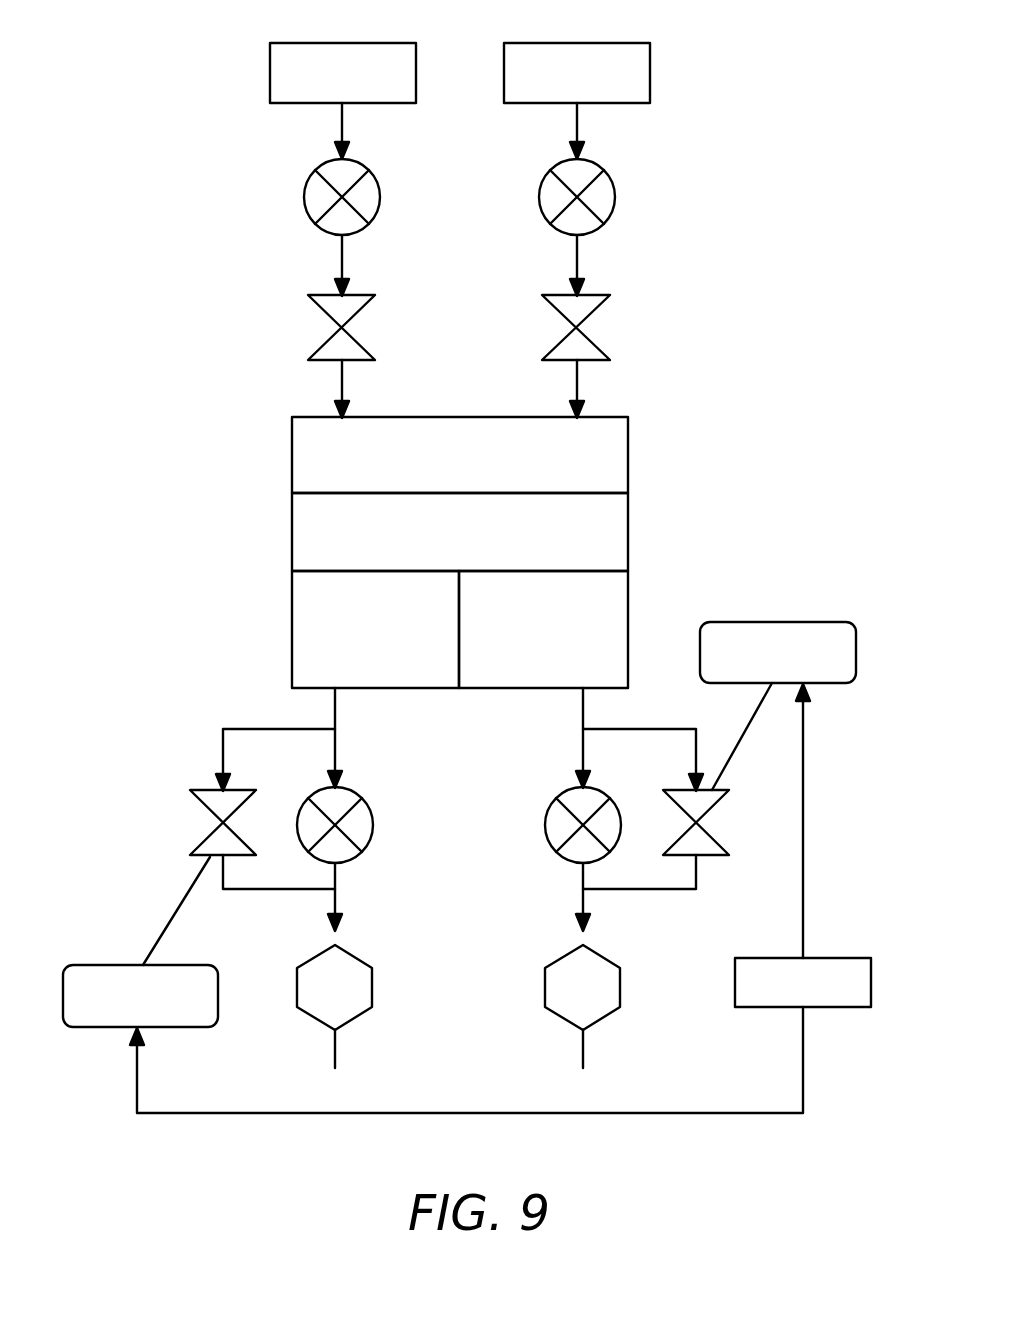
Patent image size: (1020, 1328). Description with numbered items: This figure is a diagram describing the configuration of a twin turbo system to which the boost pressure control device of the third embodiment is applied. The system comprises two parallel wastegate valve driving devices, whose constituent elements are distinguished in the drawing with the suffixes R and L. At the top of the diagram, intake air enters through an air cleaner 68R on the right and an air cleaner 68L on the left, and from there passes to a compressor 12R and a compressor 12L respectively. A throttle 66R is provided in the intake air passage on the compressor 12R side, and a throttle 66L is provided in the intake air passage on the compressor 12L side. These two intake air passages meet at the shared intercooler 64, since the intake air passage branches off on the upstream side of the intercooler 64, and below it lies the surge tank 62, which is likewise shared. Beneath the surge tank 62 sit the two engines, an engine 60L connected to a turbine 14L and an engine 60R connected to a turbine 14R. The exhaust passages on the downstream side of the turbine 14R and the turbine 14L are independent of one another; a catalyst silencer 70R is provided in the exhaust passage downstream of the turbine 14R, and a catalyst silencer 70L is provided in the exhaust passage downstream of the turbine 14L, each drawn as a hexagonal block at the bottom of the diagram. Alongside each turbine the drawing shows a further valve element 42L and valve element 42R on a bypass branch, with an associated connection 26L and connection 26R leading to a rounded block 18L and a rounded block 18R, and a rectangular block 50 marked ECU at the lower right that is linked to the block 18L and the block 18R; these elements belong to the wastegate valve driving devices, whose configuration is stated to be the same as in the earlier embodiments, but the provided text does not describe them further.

The air cleaner 68L is at (270, 72).
The air cleaner 68R is at (650, 72).
The compressor 12L is at (380, 202).
The compressor 12R is at (540, 180).
The throttle 66L is at (320, 345).
The throttle 66R is at (598, 345).
The intercooler 64 is at (628, 455).
The surge tank 62 is at (628, 522).
The engine 60L is at (292, 612).
The engine 60R is at (628, 614).
The turbine 14L is at (373, 826).
The turbine 14R is at (546, 816).
The left control valve 42L is at (208, 790).
The right control valve 42R is at (705, 858).
The left control line 26L is at (178, 906).
The right control line 26R is at (736, 752).
The left engine 18L is at (100, 964).
The right engine 18R is at (760, 622).
The catalyst silencer 70L is at (372, 992).
The catalyst silencer 70R is at (546, 975).
The ECU 50 is at (812, 957).